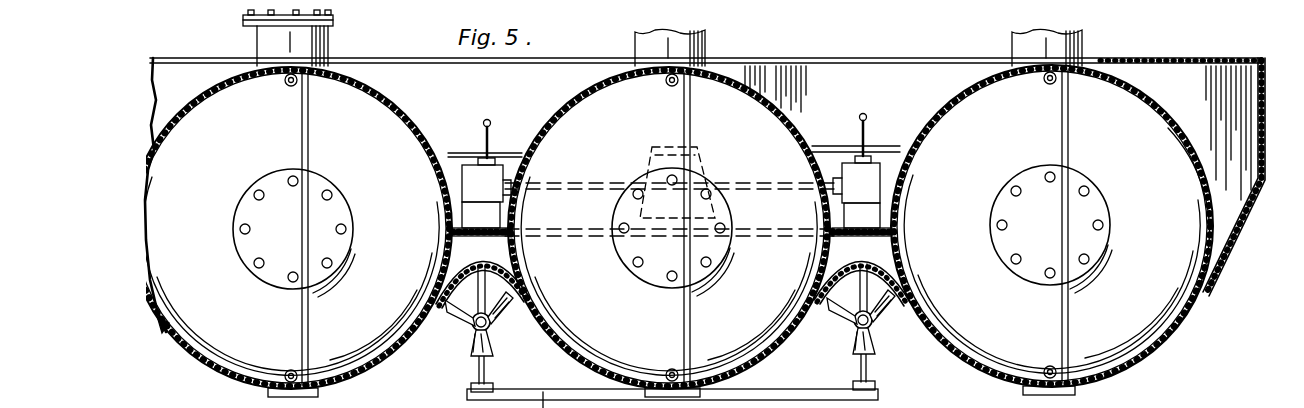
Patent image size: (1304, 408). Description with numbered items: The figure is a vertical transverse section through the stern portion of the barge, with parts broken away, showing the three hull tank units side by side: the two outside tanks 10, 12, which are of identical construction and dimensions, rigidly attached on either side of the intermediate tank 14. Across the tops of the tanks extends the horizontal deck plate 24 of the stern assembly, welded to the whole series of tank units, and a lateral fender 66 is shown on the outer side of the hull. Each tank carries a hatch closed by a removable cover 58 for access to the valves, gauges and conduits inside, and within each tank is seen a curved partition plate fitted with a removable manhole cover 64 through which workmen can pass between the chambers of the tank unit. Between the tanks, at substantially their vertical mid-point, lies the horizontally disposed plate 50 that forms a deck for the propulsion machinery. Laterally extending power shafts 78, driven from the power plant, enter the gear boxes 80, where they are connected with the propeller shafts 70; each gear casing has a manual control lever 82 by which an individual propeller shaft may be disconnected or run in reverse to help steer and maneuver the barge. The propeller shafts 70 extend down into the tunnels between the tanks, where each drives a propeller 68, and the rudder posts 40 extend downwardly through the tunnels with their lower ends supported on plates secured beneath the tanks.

The outside tank 10 is at (212, 372).
The outside tank 12 is at (1140, 358).
The intermediate tank 14 is at (800, 338).
The deck plate 24 is at (870, 60).
The rudder post 40 is at (476, 368).
The horizontally disposed plate 50 is at (672, 242).
The removable cover 58 is at (325, 45).
The manhole cover 64 is at (342, 210).
The lateral fender 66 is at (1265, 120).
The propeller 68 is at (503, 314).
The propeller shaft 70 is at (673, 284).
The power shaft 78 is at (568, 184).
The gear box 80 is at (495, 180).
The manual control lever 82 is at (489, 128).